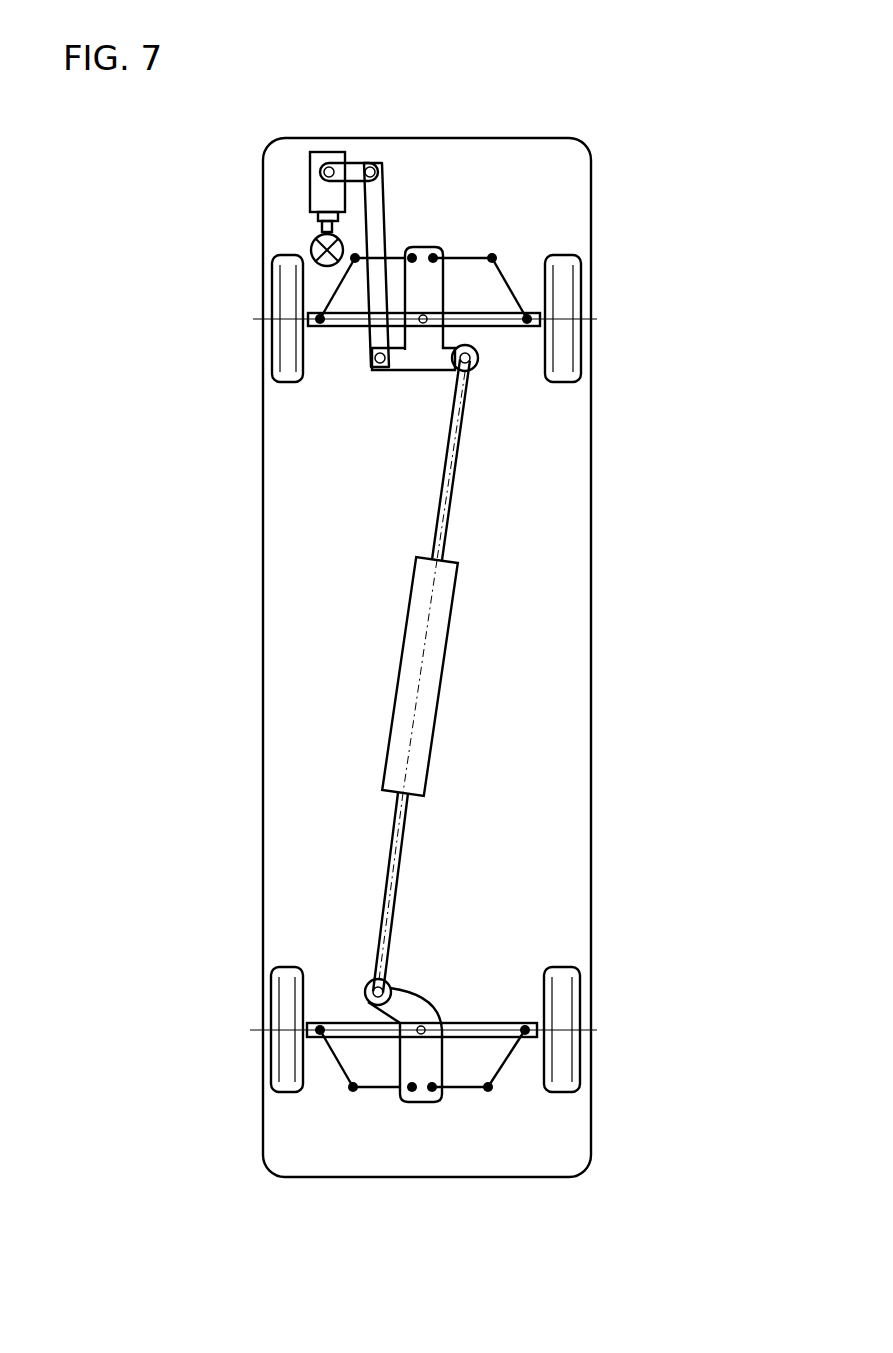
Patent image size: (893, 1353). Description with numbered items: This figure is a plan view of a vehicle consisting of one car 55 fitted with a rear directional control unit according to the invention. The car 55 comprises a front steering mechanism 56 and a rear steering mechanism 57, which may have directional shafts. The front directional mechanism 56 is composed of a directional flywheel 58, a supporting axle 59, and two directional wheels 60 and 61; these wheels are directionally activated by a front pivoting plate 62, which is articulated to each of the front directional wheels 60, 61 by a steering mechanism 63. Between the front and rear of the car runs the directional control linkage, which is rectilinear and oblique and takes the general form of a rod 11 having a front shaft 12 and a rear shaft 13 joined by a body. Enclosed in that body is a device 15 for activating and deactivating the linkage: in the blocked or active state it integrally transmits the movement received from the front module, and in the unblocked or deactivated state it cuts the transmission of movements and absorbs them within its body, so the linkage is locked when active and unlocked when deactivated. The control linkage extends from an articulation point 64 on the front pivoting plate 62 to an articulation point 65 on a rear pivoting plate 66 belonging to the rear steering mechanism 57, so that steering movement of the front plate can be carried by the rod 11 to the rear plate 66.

The car 55 is at (245, 497).
The front steering mechanism 56 is at (495, 205).
The rear steering mechanism 57 is at (367, 1115).
The directional flywheel 58 is at (295, 222).
The supporting axle 59 is at (480, 310).
The directional wheel 60 is at (280, 345).
The directional wheel 61 is at (562, 352).
The front pivoting plate 62 is at (432, 287).
The steering mechanism 63 is at (513, 230).
The articulation point 64 is at (493, 368).
The front shaft 12 is at (452, 492).
The rod 11 is at (557, 676).
The device for activating and deactivating the linkage 15 is at (447, 728).
The rear shaft 13 is at (395, 892).
The articulation point 65 is at (403, 977).
The rear pivoting plate 66 is at (425, 1062).